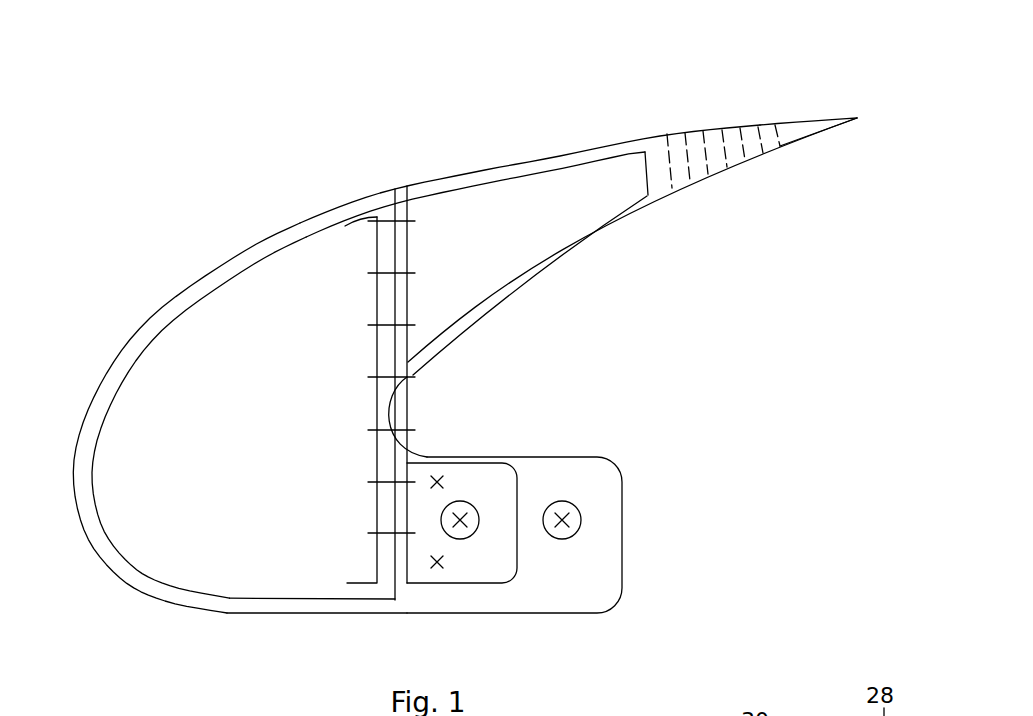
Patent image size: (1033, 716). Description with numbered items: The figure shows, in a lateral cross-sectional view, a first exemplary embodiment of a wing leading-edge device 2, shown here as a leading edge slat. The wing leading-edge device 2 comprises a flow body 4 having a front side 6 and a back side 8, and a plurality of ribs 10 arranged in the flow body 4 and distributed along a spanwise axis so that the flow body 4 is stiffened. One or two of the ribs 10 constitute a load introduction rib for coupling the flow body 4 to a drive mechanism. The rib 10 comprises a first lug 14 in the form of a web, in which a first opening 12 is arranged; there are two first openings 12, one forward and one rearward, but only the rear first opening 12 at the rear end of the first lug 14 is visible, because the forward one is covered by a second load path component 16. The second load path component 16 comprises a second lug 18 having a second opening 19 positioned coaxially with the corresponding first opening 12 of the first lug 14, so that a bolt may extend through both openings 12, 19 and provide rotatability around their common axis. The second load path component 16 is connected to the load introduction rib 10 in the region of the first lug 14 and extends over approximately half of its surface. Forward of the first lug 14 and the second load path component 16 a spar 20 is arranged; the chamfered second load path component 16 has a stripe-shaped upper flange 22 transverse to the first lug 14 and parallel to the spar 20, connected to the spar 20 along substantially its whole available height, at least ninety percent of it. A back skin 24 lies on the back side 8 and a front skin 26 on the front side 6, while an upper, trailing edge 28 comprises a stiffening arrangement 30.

The wing leading-edge device 2 is at (160, 178).
The flow body 4 is at (222, 268).
The front side 6 is at (50, 425).
The back side 8 is at (632, 265).
The rib 10 is at (205, 578).
The first opening 12 is at (446, 436).
The first lug 14 is at (597, 523).
The second load path component 16 is at (482, 557).
The second lug 18 is at (460, 556).
The second opening 19 is at (462, 502).
The spar 20 is at (405, 238).
The upper flange 22 is at (432, 290).
The back skin 24 is at (598, 237).
The front skin 26 is at (410, 175).
The trailing edge 28 is at (835, 104).
The stiffening arrangement 30 is at (710, 140).